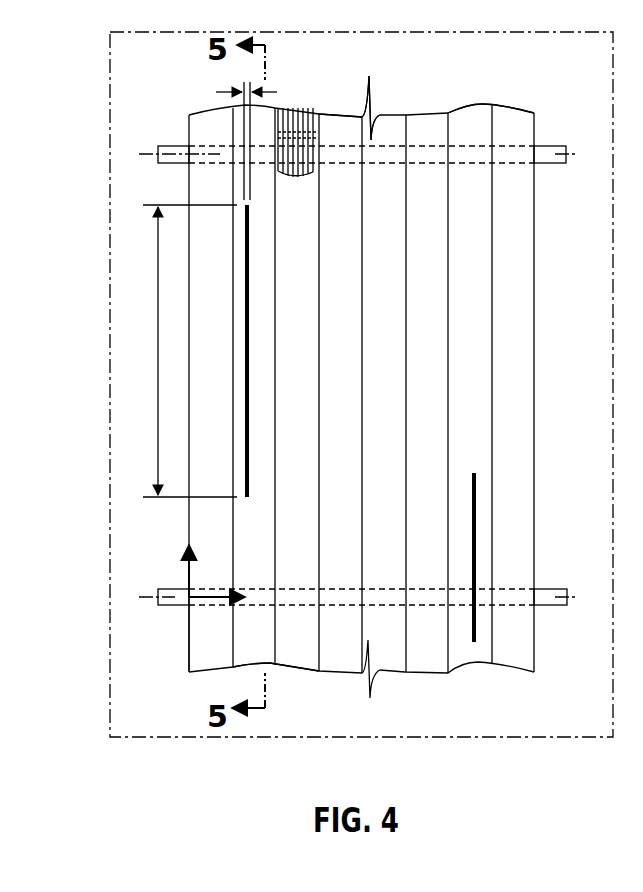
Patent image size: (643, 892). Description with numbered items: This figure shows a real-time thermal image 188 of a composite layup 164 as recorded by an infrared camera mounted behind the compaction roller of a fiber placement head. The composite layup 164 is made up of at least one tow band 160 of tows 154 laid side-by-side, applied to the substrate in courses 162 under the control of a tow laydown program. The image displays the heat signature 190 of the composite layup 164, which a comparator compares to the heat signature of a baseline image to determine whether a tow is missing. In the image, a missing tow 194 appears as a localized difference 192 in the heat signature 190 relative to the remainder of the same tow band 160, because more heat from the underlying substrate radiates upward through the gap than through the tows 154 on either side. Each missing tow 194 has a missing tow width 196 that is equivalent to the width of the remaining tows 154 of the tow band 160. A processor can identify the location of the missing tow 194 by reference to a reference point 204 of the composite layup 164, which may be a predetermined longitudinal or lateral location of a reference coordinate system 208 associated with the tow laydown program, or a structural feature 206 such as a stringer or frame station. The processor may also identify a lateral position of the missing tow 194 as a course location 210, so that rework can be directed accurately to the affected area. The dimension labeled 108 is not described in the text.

The slot length dimension 108 is at (158, 338).
The tow 154 is at (304, 108).
The tow band 160 is at (340, 113).
The course 162 is at (510, 110).
The composite layup 164 is at (388, 112).
The real-time thermal image 188 is at (523, 737).
The heat signature 190 is at (420, 673).
The localized difference 192 is at (245, 438).
The missing tow 194 is at (245, 278).
The missing tow width 196 is at (236, 90).
The reference point 204 is at (187, 598).
The structural feature 206 is at (182, 146).
The reference coordinate system 208 is at (186, 605).
The course location 210 is at (270, 665).